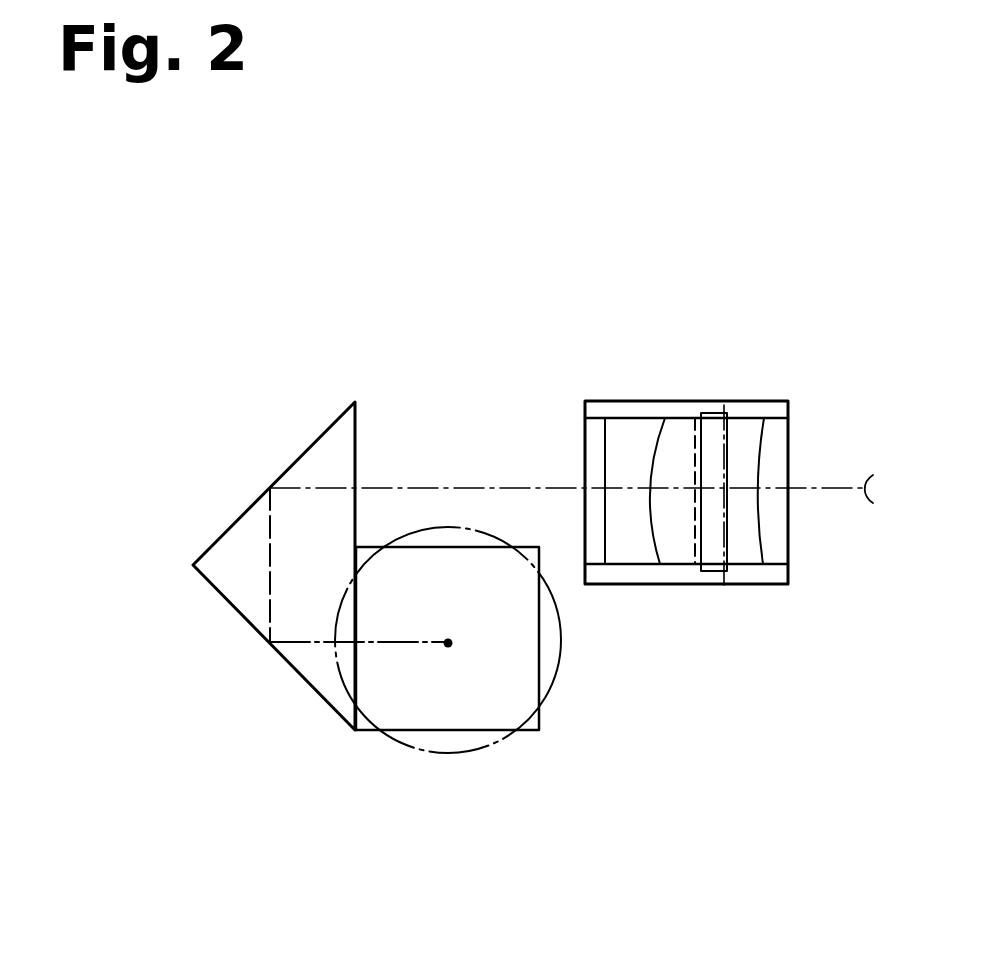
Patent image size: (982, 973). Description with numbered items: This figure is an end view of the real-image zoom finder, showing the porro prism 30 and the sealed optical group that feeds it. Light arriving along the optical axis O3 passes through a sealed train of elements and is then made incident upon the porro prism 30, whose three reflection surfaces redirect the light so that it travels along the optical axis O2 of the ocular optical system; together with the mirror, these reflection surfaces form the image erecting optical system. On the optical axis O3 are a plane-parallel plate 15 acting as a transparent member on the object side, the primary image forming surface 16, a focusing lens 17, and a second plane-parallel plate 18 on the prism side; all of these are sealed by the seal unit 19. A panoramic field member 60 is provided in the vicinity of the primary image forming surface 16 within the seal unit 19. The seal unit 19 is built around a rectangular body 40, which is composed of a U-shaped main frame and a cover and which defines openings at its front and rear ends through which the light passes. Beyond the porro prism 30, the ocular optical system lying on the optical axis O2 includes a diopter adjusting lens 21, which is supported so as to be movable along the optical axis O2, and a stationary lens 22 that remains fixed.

The plane-parallel plate 15 is at (788, 400).
The primary image forming surface 16 is at (695, 548).
The focusing lens 17 is at (672, 553).
The plane-parallel plate 18 is at (586, 401).
The seal unit 19 is at (780, 325).
The diopter adjusting lens 21 is at (450, 678).
The stationary lens 22 is at (422, 752).
The porro prism 30 is at (327, 430).
The rectangular body 40 is at (626, 408).
The panoramic field member 60 is at (724, 405).
The optical axis O2 is at (448, 643).
The optical axis O3 is at (420, 488).